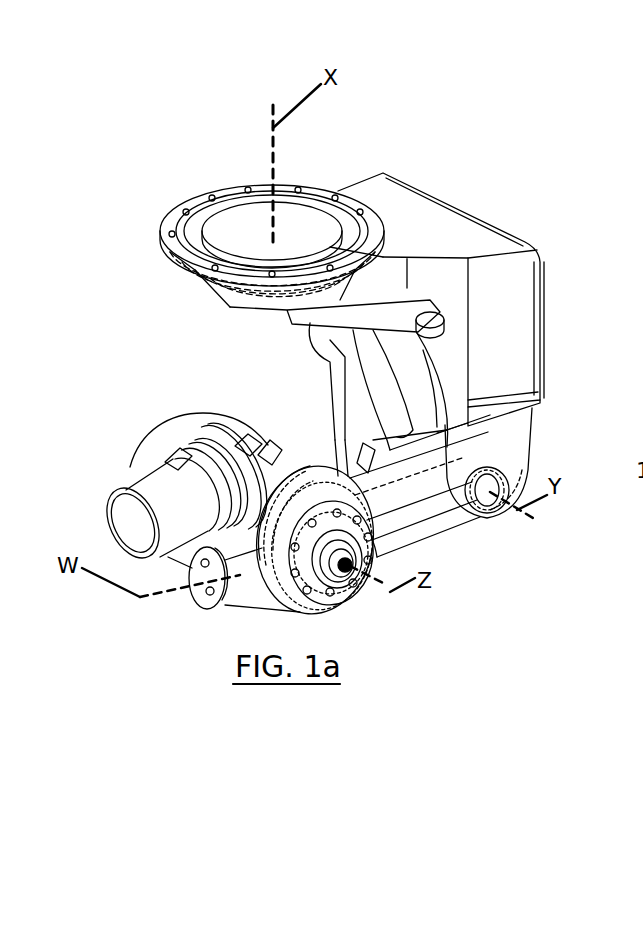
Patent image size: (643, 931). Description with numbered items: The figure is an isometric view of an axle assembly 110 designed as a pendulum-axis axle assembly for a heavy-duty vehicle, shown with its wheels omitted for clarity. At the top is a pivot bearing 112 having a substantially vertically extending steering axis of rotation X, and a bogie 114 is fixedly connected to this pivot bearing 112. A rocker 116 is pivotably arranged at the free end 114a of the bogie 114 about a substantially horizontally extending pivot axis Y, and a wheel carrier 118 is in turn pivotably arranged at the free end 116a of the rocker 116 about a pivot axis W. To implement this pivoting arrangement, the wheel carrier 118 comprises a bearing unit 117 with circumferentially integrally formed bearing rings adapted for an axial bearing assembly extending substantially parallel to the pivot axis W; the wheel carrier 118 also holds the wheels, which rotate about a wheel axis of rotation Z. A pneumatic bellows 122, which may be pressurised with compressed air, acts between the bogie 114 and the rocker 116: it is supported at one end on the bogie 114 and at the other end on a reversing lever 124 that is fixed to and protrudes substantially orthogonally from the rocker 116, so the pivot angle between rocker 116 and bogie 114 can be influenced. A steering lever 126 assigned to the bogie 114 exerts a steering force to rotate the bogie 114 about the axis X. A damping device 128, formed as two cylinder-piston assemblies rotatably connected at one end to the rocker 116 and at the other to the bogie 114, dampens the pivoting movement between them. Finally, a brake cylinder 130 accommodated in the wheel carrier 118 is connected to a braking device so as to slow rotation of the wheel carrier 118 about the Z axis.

The axle assembly 110 is at (172, 124).
The pivot bearing 112 is at (312, 195).
The bogie 114 is at (465, 215).
The free end 114a is at (507, 462).
The rocker 116 is at (427, 510).
The free end 116a is at (202, 602).
The bearing unit 117 is at (205, 638).
The wheel carrier 118 is at (330, 597).
The pneumatic bellows 122 is at (318, 342).
The reversing lever 124 is at (337, 413).
The steering lever 126 is at (432, 318).
The damping device 128 is at (377, 488).
The brake cylinder 130 is at (130, 517).